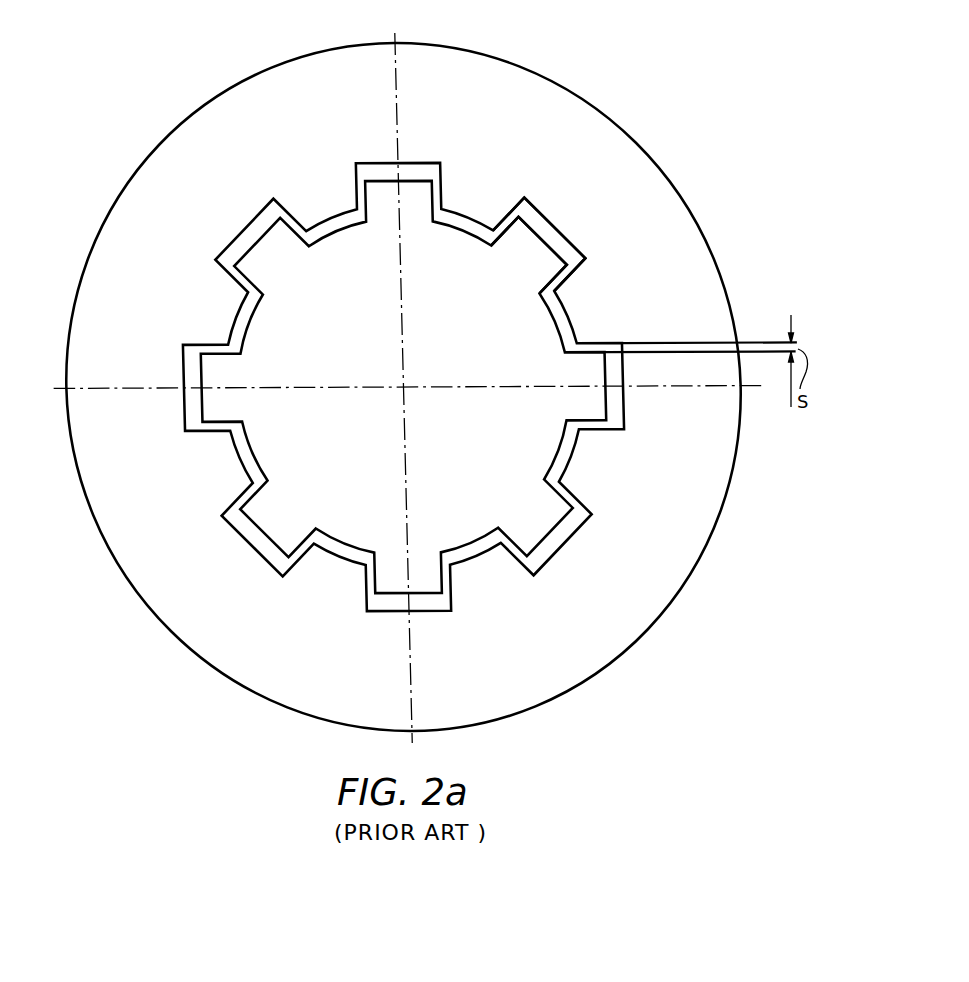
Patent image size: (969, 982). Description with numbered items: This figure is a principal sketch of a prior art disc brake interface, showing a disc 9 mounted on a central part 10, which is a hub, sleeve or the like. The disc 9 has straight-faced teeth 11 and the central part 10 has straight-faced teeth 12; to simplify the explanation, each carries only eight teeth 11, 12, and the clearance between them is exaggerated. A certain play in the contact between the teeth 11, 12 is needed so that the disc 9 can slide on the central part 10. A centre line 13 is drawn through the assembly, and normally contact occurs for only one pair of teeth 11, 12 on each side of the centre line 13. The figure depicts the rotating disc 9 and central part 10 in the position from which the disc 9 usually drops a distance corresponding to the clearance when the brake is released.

The disc 9 is at (403, 387).
The central part 10 is at (404, 387).
The teeth of the disc 11 is at (403, 387).
The teeth of the central part 12 is at (538, 245).
The centre line 13 is at (403, 388).